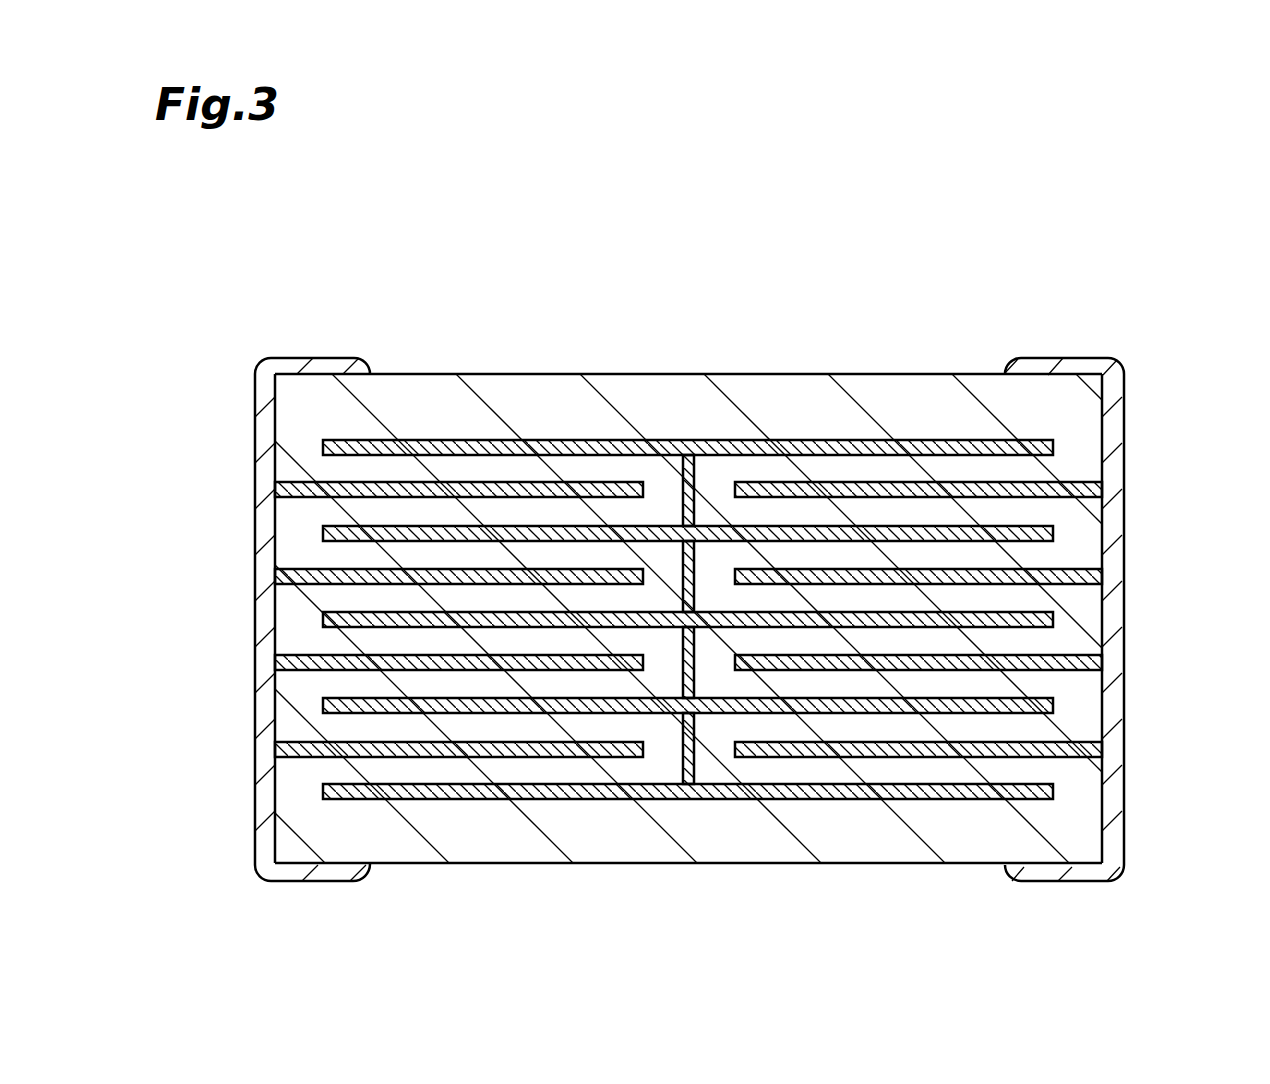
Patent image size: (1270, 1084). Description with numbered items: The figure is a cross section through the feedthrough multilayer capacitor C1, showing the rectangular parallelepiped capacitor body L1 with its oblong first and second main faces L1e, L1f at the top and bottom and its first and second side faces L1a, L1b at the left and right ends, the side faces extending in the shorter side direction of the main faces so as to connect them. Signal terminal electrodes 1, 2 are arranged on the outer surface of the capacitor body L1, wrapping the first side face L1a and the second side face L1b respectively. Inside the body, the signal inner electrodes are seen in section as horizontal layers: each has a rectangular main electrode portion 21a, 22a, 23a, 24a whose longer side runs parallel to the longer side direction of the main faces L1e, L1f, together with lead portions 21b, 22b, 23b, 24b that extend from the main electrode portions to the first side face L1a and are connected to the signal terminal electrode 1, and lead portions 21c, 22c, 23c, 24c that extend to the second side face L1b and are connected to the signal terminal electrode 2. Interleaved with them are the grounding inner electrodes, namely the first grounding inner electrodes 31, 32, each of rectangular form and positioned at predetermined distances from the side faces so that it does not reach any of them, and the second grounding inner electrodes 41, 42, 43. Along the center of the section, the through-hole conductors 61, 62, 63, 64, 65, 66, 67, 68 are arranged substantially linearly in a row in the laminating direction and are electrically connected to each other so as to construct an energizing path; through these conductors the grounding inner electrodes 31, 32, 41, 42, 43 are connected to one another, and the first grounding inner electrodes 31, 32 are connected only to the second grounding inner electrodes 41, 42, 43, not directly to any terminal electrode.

The signal terminal electrode 1 is at (308, 362).
The signal terminal electrode 2 is at (1068, 373).
The feedthrough multilayer capacitor C1 is at (1052, 263).
The capacitor body L1 is at (635, 620).
The first side face L1a is at (262, 820).
The second side face L1b is at (1103, 813).
The first main face L1e is at (425, 373).
The second main face L1f is at (425, 865).
The main electrode portion 21a is at (687, 407).
The lead portion 21b is at (300, 484).
The lead portion 21c is at (1076, 484).
The main electrode portion 22a is at (687, 451).
The lead portion 22b is at (300, 570).
The lead portion 22c is at (1076, 569).
The main electrode portion 23a is at (687, 775).
The lead portion 23b is at (300, 656).
The lead portion 23c is at (1076, 655).
The main electrode portion 24a is at (687, 816).
The lead portion 24b is at (300, 742).
The lead portion 24c is at (1076, 741).
The first grounding inner electrode 31 is at (353, 526).
The first grounding inner electrode 32 is at (353, 698).
The second grounding inner electrode 41 is at (353, 440).
The second grounding inner electrode 42 is at (353, 612).
The second grounding inner electrode 43 is at (350, 784).
The through-hole conductor 61 is at (662, 404).
The through-hole conductor 62 is at (683, 513).
The through-hole conductor 63 is at (721, 447).
The through-hole conductor 64 is at (694, 602).
The through-hole conductor 65 is at (721, 795).
The through-hole conductor 66 is at (694, 682).
The through-hole conductor 67 is at (662, 838).
The through-hole conductor 68 is at (683, 724).